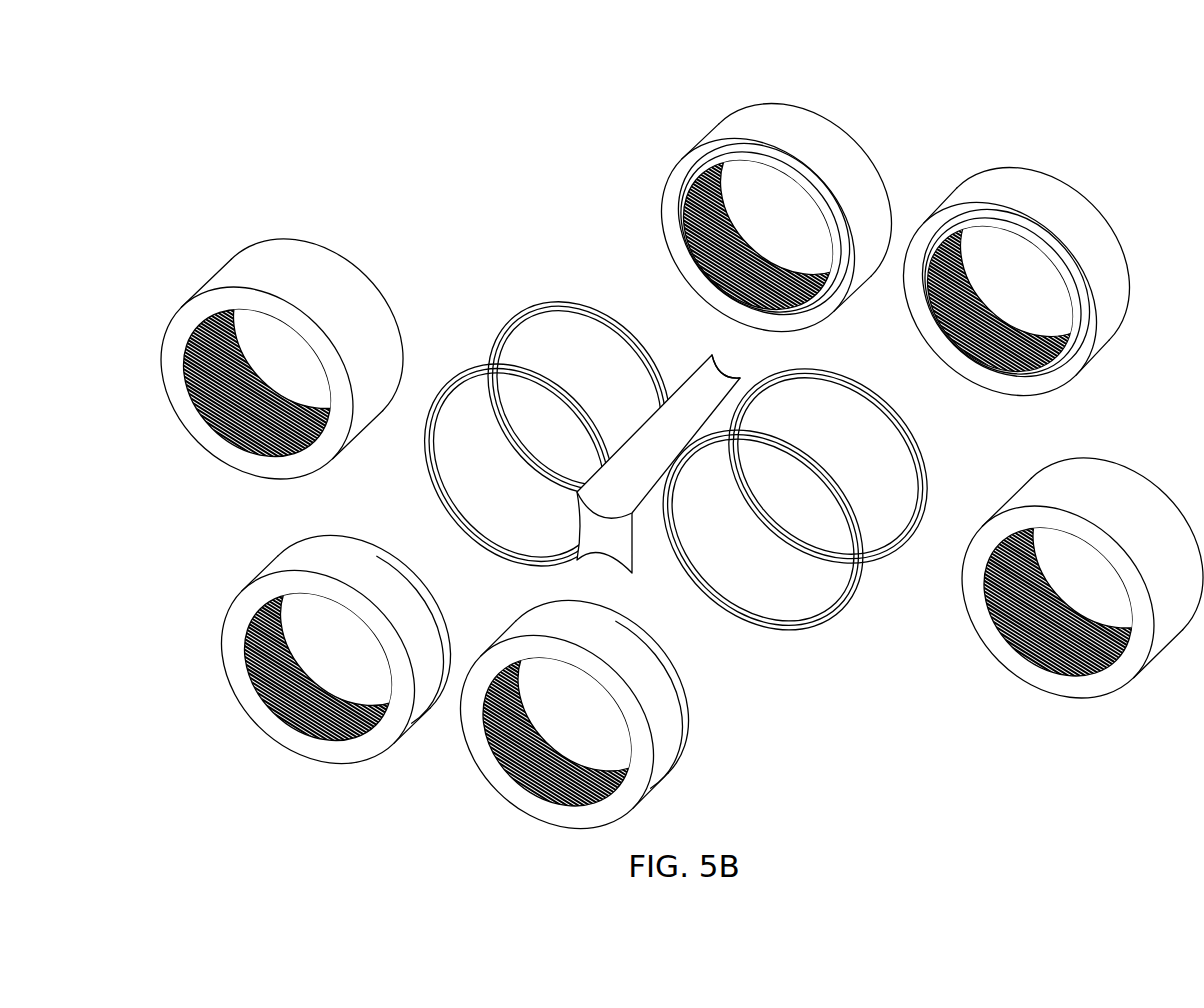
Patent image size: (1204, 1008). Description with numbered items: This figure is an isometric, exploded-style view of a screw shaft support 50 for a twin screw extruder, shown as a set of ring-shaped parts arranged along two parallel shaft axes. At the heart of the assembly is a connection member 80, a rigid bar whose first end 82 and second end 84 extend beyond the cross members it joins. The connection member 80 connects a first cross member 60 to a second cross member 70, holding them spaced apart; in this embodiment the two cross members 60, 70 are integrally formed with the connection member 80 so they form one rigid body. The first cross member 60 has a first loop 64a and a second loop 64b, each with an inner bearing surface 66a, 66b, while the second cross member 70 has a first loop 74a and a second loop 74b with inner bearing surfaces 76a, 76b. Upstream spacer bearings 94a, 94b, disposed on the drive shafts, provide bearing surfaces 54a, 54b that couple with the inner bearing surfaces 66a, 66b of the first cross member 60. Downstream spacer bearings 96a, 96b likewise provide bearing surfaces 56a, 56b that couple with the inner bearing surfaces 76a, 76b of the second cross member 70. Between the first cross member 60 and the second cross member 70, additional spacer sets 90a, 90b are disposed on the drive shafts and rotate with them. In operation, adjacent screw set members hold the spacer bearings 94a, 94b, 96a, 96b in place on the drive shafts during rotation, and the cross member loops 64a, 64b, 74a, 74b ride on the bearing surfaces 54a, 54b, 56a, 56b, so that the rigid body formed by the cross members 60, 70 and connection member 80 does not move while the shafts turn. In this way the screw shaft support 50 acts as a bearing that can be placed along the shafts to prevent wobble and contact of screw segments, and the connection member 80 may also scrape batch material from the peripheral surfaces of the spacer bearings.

The screw shaft support 50 is at (372, 128).
The bearing surface 54a is at (318, 663).
The outer bearing surface 54b is at (584, 731).
The second bearing surface 56a is at (802, 178).
The second outer bearing surface 56b is at (1070, 277).
The first cross member 60 is at (767, 545).
The first loop 64a is at (450, 512).
The second loop 64b is at (853, 590).
The inner bearing surface 66a is at (488, 525).
The inner bearing surface 66b is at (705, 570).
The second cross member 70 is at (578, 362).
The first loop 74a is at (582, 308).
The second loop 74b is at (887, 413).
The inner bearing surface 76a is at (560, 477).
The inner bearing surface 76b is at (803, 545).
The connection member 80 is at (672, 462).
The first end 82 is at (602, 533).
The second end 84 is at (740, 380).
The additional spacer set 90a is at (245, 272).
The additional spacer set 90b is at (1175, 602).
The upstream spacer bearing 94a is at (228, 638).
The upstream spacer bearing 94b is at (670, 727).
The downstream spacer bearing 96a is at (758, 229).
The downstream spacer bearing 96b is at (1020, 298).